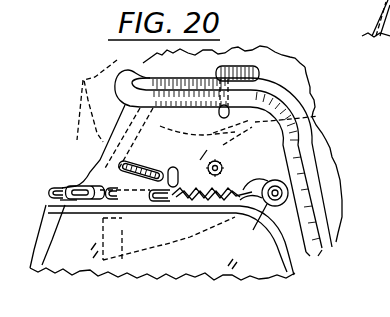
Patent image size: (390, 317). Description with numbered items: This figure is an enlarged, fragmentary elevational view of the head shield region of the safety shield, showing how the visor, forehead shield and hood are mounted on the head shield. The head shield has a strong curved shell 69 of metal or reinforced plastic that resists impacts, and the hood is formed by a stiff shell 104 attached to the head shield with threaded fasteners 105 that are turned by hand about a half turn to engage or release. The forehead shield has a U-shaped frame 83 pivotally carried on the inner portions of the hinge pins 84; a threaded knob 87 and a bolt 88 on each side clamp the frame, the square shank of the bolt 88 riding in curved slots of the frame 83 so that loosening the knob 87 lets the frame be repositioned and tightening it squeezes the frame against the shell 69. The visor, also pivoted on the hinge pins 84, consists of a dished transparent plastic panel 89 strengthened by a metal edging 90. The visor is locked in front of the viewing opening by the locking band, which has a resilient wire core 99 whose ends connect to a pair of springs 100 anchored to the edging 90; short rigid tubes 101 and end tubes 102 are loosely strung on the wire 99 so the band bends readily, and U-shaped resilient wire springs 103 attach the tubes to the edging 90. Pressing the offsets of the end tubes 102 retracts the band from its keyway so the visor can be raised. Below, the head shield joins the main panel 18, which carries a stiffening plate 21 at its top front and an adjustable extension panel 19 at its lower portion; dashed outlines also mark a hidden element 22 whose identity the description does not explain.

The threaded fastener 105 is at (252, 72).
The U-shaped frame 83 is at (254, 76).
The stiff shell 104 is at (320, 132).
The threaded knob 87 is at (268, 128).
The bolt 88 is at (228, 174).
The hinge pin 84 is at (262, 220).
The curved shell 69 is at (302, 258).
The metal edging 90 is at (306, 268).
The transparent plastic panel 89 is at (233, 276).
The spring 100 is at (218, 203).
The rigid tube 101 is at (123, 200).
The end tube 102 is at (160, 200).
The resilient wire core 99 is at (105, 201).
The U-shaped resilient wire spring 103 is at (53, 203).
The stiffening plate 21 is at (160, 113).
The hidden member 22 is at (97, 155).
The adjustable extension panel 19 is at (197, 156).
The panel 18 is at (38, 183).